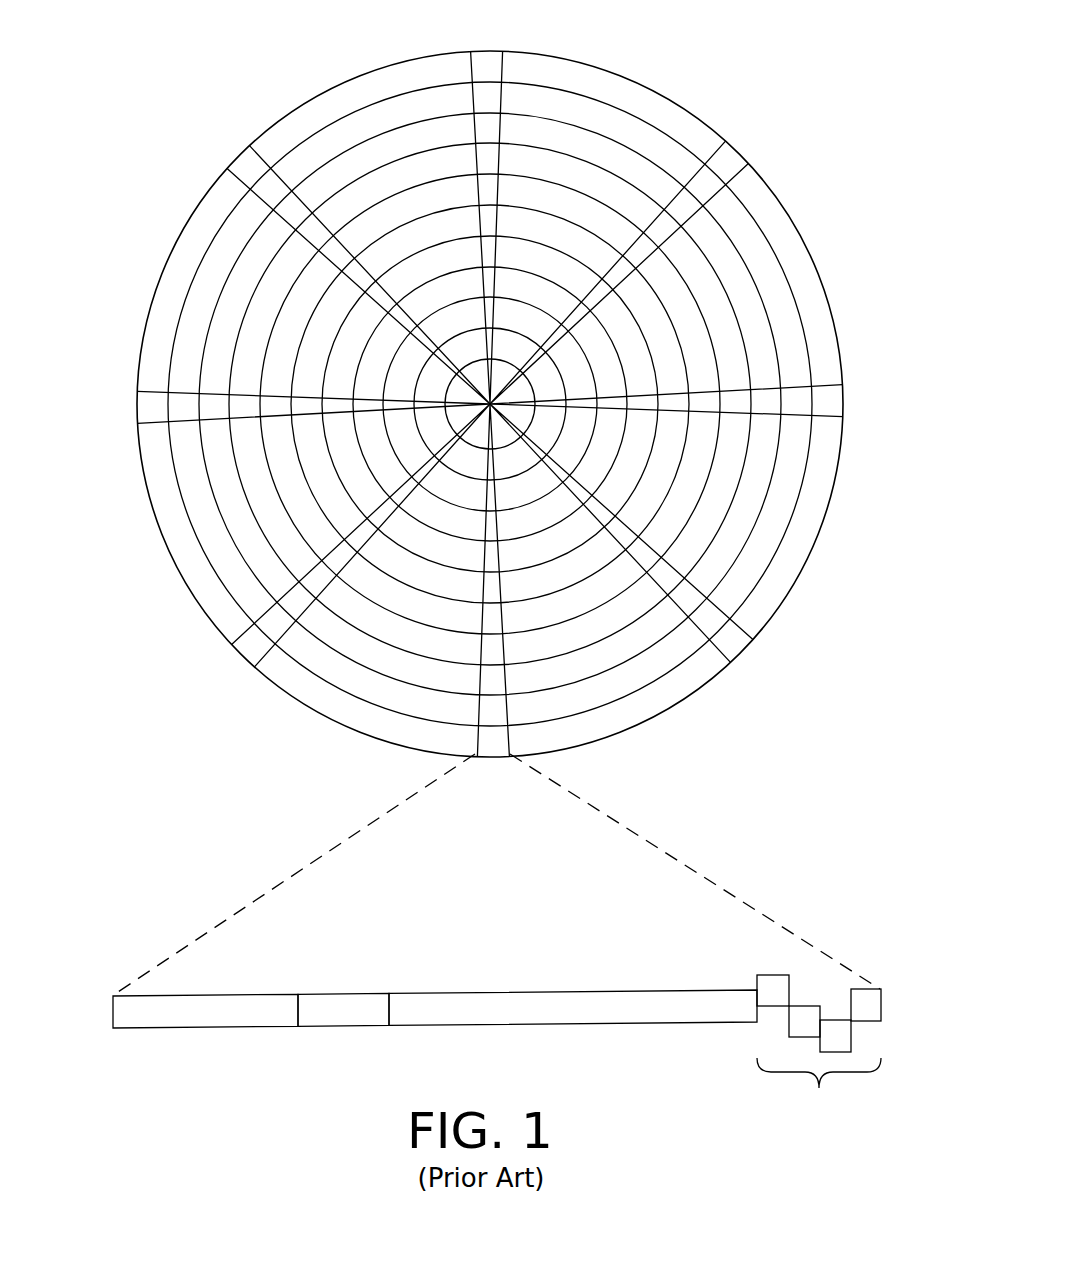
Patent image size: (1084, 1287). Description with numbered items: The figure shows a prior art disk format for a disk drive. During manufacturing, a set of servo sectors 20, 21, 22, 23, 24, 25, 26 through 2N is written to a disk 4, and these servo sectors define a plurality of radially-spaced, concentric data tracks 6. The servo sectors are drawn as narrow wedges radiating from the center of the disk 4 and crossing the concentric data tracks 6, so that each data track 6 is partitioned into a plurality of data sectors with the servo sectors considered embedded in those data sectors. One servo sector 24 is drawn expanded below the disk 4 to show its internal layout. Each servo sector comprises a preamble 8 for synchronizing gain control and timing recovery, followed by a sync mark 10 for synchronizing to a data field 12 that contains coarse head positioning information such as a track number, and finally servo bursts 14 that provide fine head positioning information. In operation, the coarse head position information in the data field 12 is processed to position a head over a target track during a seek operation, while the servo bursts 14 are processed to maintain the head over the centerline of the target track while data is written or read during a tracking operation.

The disk 4 is at (228, 64).
The data track 6 is at (608, 120).
The servo sector 20 is at (487, 68).
The servo sector 21 is at (728, 165).
The servo sector 22 is at (835, 403).
The servo sector 23 is at (735, 640).
The servo sector 24 is at (340, 831).
The servo sector 25 is at (248, 647).
The servo sector 26 is at (142, 406).
The servo sector 2N is at (246, 168).
The preamble 8 is at (180, 1030).
The sync mark 10 is at (338, 1030).
The data field 12 is at (558, 1025).
The servo bursts 14 is at (745, 955).